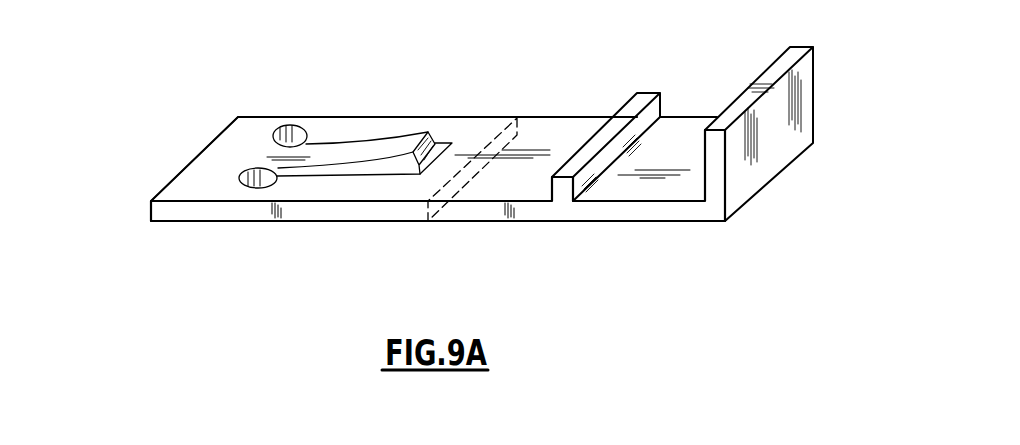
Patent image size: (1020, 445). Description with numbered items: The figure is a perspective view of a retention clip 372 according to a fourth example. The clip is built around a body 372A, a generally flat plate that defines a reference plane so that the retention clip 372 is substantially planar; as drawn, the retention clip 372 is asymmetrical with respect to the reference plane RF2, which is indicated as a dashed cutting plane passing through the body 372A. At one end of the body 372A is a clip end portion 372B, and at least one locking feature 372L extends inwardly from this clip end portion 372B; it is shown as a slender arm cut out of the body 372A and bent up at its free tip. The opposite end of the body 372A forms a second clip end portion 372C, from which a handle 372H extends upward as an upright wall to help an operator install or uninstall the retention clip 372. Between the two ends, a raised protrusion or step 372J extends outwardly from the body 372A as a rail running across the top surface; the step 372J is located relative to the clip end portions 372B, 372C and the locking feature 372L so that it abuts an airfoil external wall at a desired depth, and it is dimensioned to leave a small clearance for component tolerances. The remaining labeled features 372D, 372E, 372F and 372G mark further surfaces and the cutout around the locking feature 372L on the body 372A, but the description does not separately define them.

The retention clip 372 is at (123, 91).
The body 372A is at (320, 190).
The clip end portion 372B is at (224, 190).
The clip end portion 372C is at (670, 182).
The front face 372D is at (387, 212).
The back edge 372E is at (430, 117).
The recessed surface region 372F is at (527, 178).
The slot opening 372G is at (354, 131).
The handle 372H is at (790, 98).
The step 372J is at (650, 93).
The locking feature 372L is at (395, 147).
The reference plane RF2 is at (463, 186).